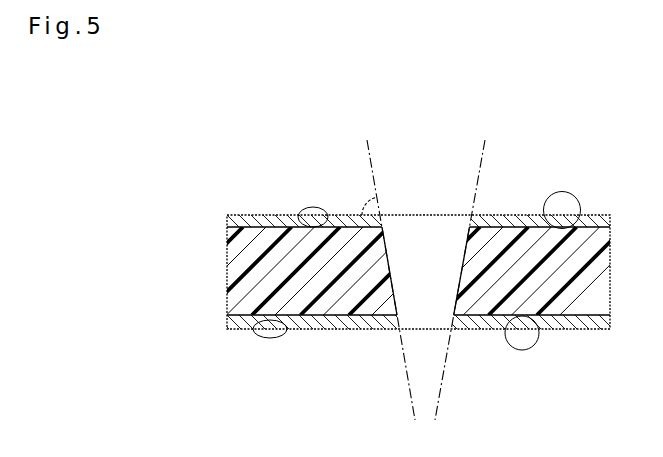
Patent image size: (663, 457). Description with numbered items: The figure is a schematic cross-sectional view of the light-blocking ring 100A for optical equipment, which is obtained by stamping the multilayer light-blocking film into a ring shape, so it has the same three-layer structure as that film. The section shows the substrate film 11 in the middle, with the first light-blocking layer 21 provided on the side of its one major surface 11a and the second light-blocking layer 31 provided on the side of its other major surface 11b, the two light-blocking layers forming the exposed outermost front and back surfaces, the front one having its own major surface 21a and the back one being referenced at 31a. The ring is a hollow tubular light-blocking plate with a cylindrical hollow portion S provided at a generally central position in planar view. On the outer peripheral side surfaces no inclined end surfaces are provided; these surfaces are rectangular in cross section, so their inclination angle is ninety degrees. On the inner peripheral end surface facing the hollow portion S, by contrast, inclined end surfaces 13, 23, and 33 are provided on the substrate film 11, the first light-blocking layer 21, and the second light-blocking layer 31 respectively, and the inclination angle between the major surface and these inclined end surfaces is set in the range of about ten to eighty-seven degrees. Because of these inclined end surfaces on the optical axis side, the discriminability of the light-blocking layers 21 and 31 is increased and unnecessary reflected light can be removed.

The light-blocking ring for optical equipment 100A is at (443, 166).
The first light-blocking layer 21 is at (230, 221).
The substrate film 11 is at (232, 266).
The second light-blocking layer 31 is at (230, 322).
The inclined end surface 23 is at (458, 215).
The inclined end surface 13 is at (462, 257).
The inclined end surface 33 is at (452, 322).
The hollow portion S is at (434, 284).
The major surface of the substrate film 11a is at (326, 223).
The other major surface of the substrate film 11b is at (257, 321).
The major surface of the first light-blocking layer 21a is at (570, 224).
The outer surface of second outer layer 31a is at (517, 316).